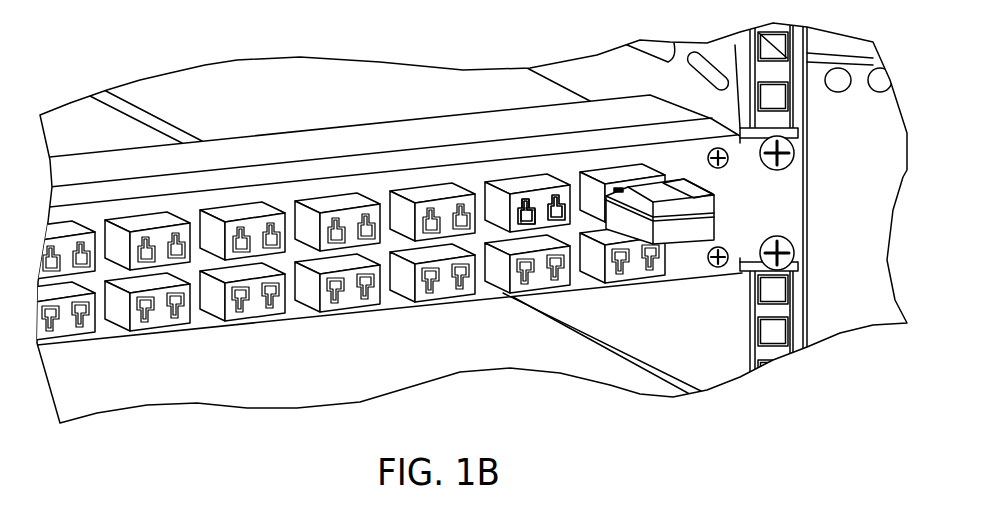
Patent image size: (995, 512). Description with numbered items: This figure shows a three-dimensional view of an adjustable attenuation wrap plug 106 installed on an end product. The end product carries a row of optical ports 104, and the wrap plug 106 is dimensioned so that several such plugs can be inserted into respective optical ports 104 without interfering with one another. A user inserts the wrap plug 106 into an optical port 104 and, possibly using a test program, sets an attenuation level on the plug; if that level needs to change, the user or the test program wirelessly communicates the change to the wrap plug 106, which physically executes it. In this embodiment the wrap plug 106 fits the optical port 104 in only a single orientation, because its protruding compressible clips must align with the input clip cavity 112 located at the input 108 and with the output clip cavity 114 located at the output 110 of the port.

The optical port 104 is at (620, 172).
The adjustable attenuation wrap plug 106 is at (680, 233).
The input 108 is at (515, 220).
The output 110 is at (550, 220).
The input clip cavity 112 is at (523, 205).
The output clip cavity 114 is at (528, 192).